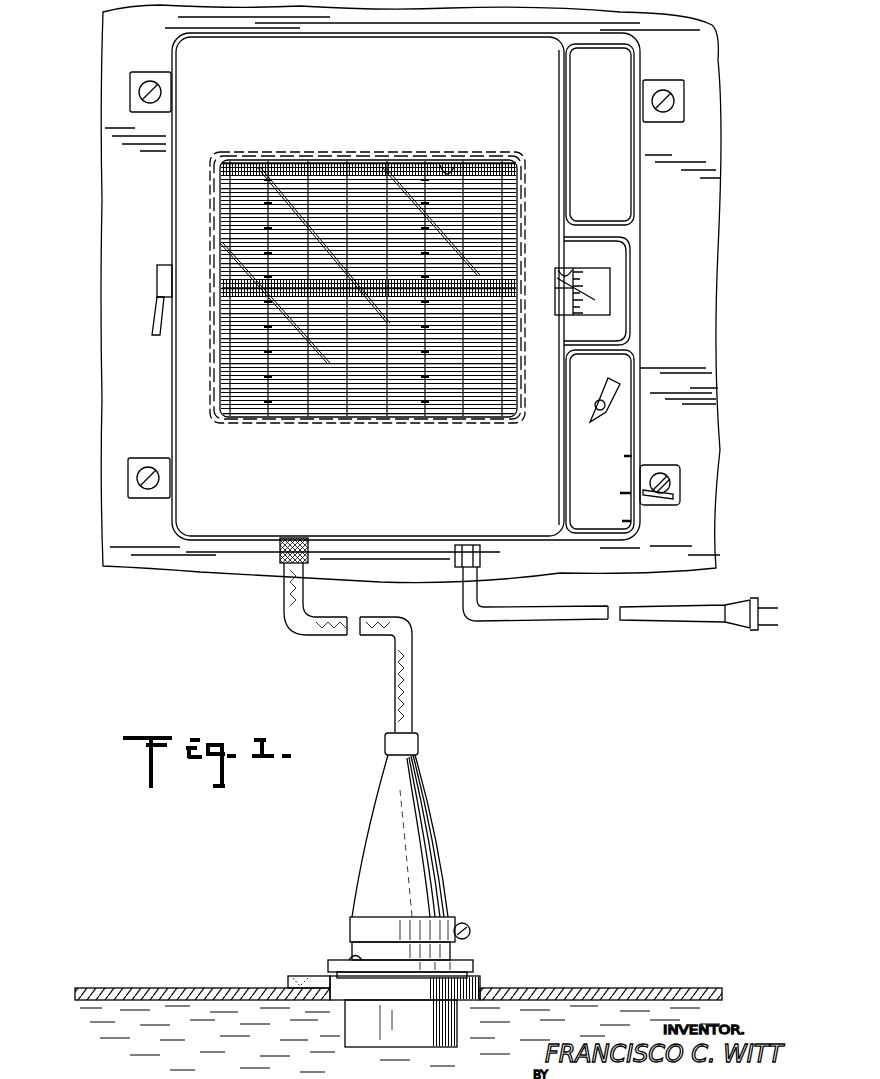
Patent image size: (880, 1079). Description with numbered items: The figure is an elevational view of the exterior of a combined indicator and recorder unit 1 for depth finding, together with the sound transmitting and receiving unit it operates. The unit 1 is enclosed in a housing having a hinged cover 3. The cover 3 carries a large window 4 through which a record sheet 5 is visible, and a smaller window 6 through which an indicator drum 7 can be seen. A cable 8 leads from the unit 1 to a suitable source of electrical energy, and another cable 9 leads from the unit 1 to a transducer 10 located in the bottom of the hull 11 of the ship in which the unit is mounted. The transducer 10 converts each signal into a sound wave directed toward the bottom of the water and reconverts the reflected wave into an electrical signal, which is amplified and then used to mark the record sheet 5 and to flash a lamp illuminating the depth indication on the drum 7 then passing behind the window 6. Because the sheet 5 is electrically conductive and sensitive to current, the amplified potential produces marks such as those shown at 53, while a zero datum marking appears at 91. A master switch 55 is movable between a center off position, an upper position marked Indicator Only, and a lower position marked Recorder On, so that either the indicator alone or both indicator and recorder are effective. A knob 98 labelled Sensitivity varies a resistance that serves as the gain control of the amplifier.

The combined indicator and recorder unit 1 is at (700, 233).
The hinged cover 3 is at (535, 538).
The large window 4 is at (454, 166).
The record sheet 5 is at (481, 192).
The smaller window 6 is at (571, 272).
The indicator drum 7 is at (607, 283).
The cable 8 is at (523, 617).
The cable 9 is at (311, 634).
The transducer 10 is at (420, 800).
The hull 11 is at (544, 995).
The mark 53 is at (366, 281).
The master switch 55 is at (670, 500).
The zero datum mark 91 is at (375, 166).
The knob 98 is at (618, 393).